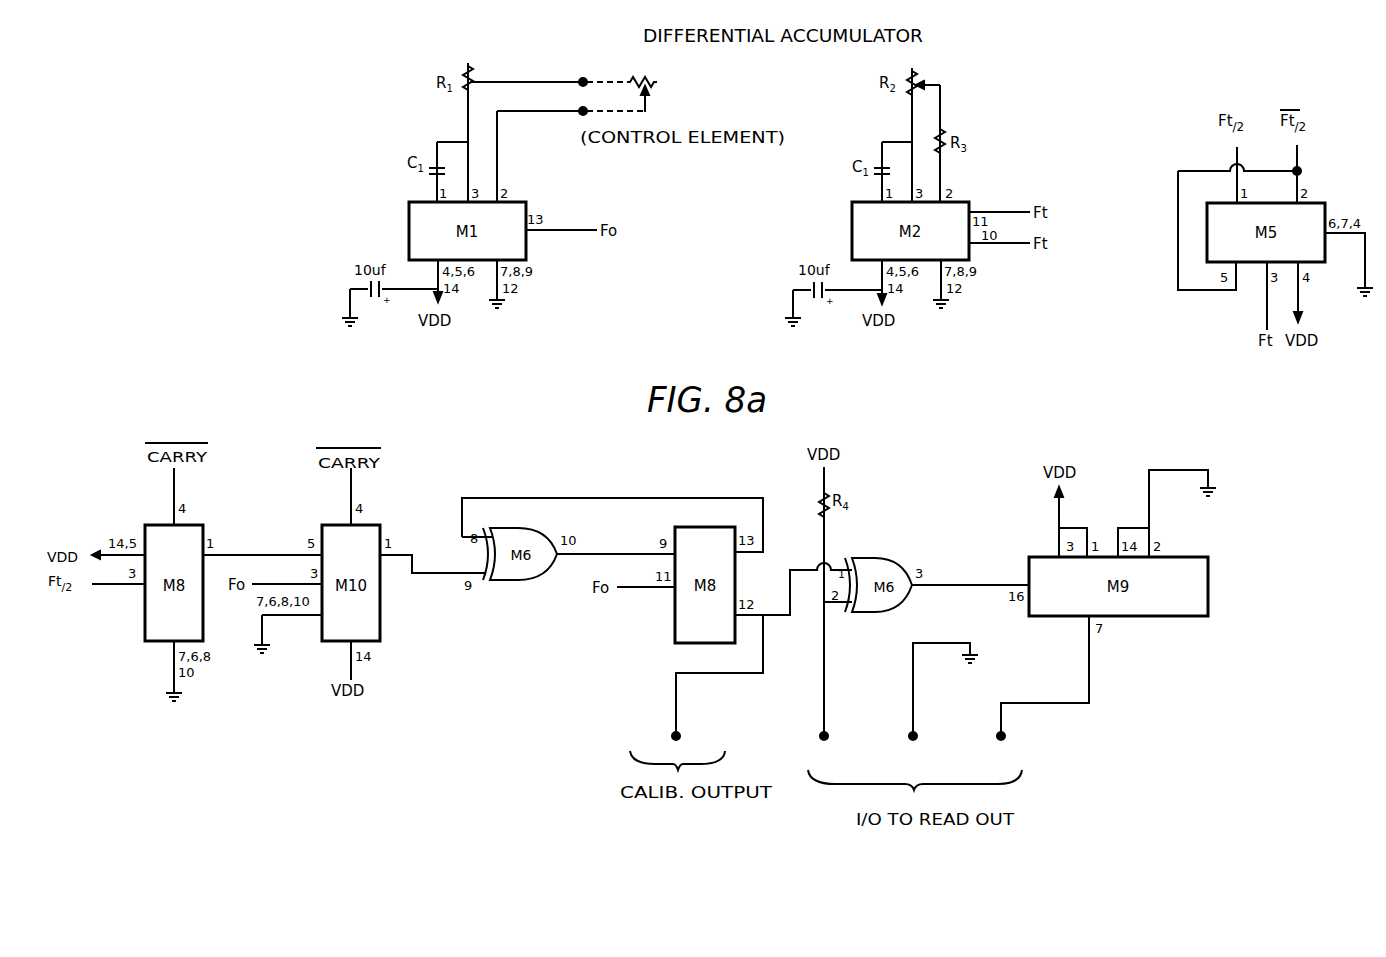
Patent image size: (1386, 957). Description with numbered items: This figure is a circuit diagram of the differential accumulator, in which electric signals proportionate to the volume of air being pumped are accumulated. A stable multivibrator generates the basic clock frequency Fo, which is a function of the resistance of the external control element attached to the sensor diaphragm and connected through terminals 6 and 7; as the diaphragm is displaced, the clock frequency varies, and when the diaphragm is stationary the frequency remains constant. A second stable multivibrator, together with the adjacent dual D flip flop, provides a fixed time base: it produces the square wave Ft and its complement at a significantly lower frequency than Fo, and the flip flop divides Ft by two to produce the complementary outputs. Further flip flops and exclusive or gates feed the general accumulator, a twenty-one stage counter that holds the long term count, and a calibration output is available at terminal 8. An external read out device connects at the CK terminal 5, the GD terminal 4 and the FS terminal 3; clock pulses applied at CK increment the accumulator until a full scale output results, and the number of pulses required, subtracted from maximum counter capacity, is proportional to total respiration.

The FS terminal (I/O to read out) 3 is at (1039, 693).
The GD terminal (I/O to read out) 4 is at (937, 706).
The CK terminal (I/O to read out) 5 is at (830, 738).
The control element terminal line 6 is at (563, 85).
The control element terminal line 7 is at (571, 154).
The CB calibration output terminal 8 is at (672, 742).